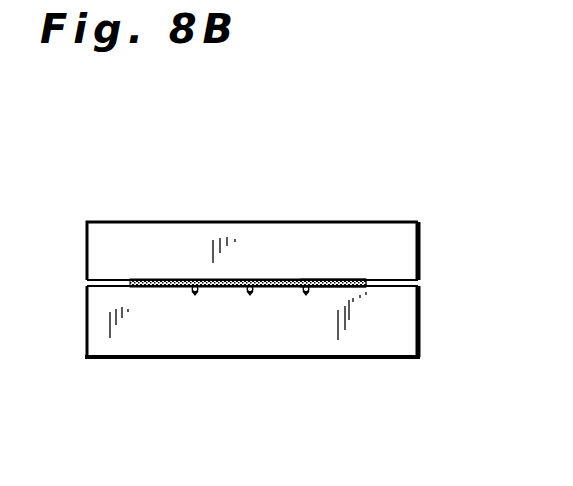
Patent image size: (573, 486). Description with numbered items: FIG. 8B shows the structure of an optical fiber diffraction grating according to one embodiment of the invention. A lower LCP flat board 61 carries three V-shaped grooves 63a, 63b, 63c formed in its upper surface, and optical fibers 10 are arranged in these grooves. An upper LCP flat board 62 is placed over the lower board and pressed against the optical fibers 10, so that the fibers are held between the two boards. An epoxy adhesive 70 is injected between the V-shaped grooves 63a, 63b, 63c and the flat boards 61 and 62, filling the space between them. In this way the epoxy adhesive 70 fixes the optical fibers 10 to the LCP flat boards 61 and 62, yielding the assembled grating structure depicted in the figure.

The optical fiber 10 is at (305, 286).
The LCP flat board 61 is at (212, 338).
The upper LCP flat board 62 is at (171, 241).
The V-shaped groove 63a is at (193, 292).
The V-shaped groove 63b is at (249, 293).
The V-shaped groove 63c is at (307, 293).
The epoxy adhesive 70 is at (361, 284).